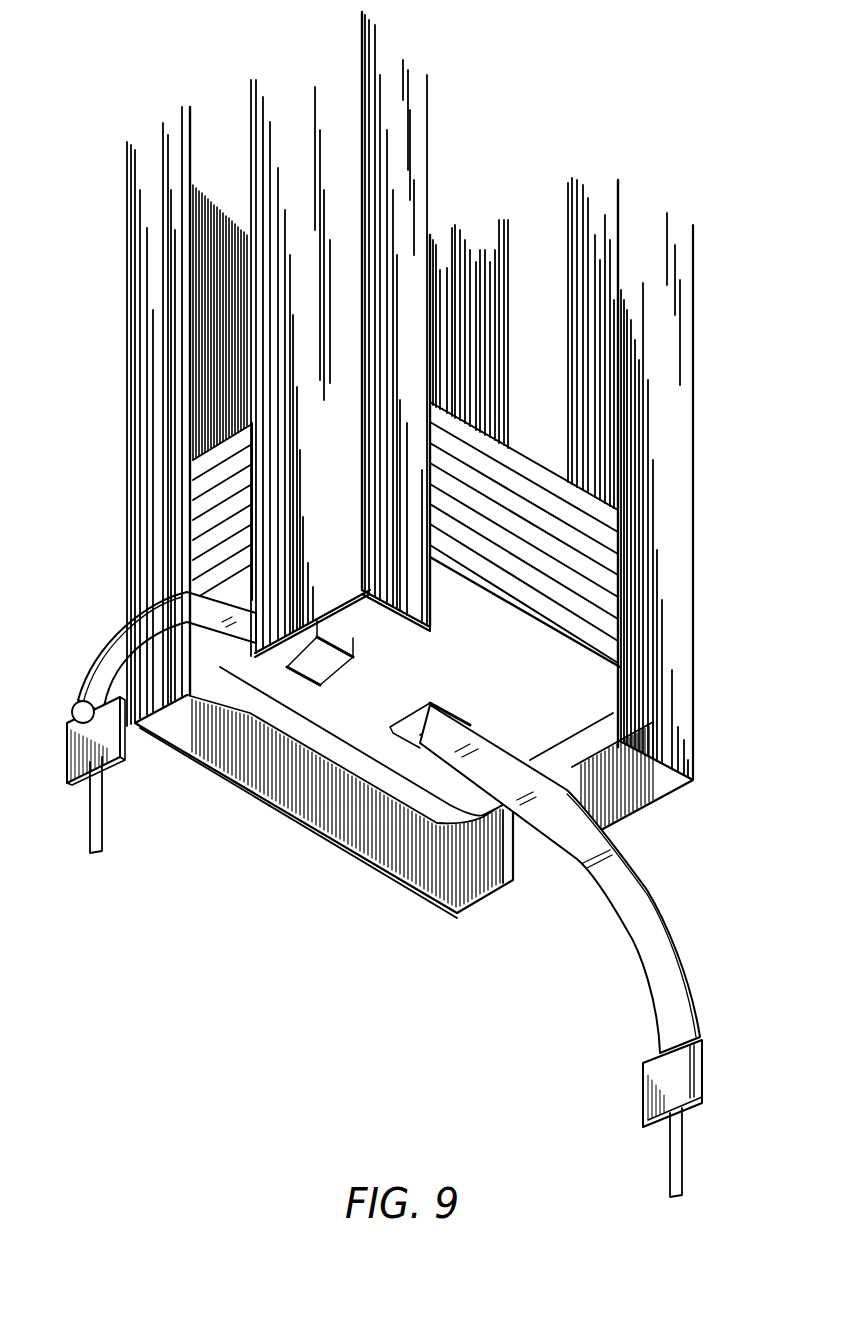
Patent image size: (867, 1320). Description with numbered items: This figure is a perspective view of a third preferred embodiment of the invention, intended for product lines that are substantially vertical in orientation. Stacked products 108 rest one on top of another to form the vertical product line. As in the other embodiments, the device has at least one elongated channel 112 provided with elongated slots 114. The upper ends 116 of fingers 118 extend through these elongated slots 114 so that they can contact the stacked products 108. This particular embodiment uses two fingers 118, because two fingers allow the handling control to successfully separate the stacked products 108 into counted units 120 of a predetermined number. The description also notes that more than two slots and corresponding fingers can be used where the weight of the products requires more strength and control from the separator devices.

The stacked products 108 is at (607, 577).
The elongated channel 112 is at (279, 811).
The elongated slots 114 is at (215, 134).
The upper ends 116 is at (432, 700).
The fingers 118 is at (95, 648).
The counted units 120 is at (215, 508).